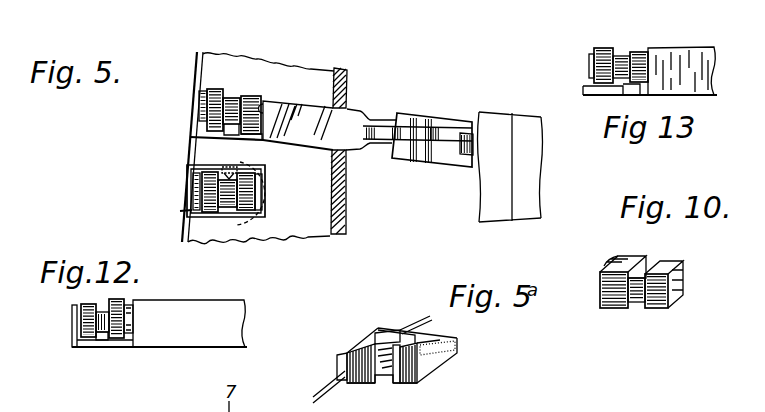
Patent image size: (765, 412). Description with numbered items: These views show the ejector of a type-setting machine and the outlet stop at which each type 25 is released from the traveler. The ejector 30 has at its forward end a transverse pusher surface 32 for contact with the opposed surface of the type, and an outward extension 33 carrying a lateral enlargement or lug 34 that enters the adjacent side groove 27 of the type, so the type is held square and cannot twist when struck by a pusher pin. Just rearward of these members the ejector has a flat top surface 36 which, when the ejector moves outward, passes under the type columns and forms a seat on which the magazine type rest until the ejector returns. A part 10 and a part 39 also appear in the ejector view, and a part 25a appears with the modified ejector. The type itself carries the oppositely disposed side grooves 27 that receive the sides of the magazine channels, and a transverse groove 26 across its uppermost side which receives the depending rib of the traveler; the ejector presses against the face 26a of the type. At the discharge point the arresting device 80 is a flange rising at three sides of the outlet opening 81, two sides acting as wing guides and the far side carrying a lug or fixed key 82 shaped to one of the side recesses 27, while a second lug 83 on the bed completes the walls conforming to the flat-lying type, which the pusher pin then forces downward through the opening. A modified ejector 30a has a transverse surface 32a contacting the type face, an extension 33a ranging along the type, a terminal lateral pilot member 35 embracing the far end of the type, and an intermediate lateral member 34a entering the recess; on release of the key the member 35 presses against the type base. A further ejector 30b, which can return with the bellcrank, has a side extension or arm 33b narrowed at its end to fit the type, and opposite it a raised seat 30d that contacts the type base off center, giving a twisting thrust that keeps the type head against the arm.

In FIG. 5, the casing wall 10 is at (346, 210).
In FIG. 13, the type 25 is at (608, 46).
In FIG. 10, the type 25 is at (659, 282).
In FIG. 12, the gear 25a is at (81, 317).
In FIG. 10, the transverse groove 26 is at (649, 264).
In FIG. 5, the face of the type 26a is at (207, 106).
In FIG. 12, the face of the type 26a is at (134, 337).
In FIG. 5, the side grooves 27 is at (236, 99).
In FIG. 10, the side grooves 27 is at (631, 305).
In FIG. 12, the side grooves 27 is at (100, 312).
In FIG. 5, the ejector 30 is at (358, 111).
In FIG. 12, the ejector 30a is at (189, 323).
In FIG. 13, the ejector 30b is at (695, 51).
In FIG. 13, the raised seat 30d is at (585, 93).
In FIG. 5, the transverse pusher surface 32 is at (263, 101).
In FIG. 12, the transverse surface 32a is at (125, 300).
In FIG. 5, the outward extension 33 is at (244, 136).
In FIG. 12, the extension 33a is at (90, 343).
In FIG. 13, the side extension or arm 33b is at (627, 87).
In FIG. 5, the lateral enlargement or lug 34 is at (229, 136).
In FIG. 12, the intermediate lateral member 34a is at (102, 337).
In FIG. 12, the terminal lateral pilot member 35 is at (72, 324).
In FIG. 5, the flat top surface 36 is at (296, 120).
In FIG. 5, the plate 39 is at (192, 135).
In FIG. 5, the arresting device 80 is at (266, 168).
In FIG. 5A, the arresting device 80 is at (458, 347).
In FIG. 5A, the outlet opening 81 is at (372, 353).
In FIG. 5, the lug or fixed key 82 is at (222, 168).
In FIG. 5A, the lug or fixed key 82 is at (407, 342).
In FIG. 5A, the lug 83 is at (383, 381).